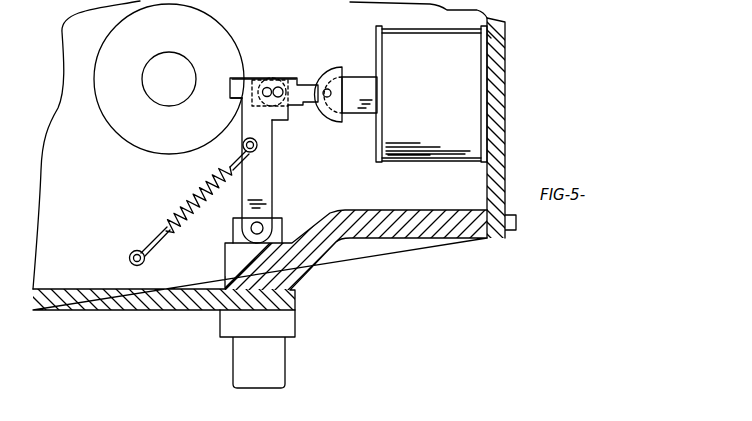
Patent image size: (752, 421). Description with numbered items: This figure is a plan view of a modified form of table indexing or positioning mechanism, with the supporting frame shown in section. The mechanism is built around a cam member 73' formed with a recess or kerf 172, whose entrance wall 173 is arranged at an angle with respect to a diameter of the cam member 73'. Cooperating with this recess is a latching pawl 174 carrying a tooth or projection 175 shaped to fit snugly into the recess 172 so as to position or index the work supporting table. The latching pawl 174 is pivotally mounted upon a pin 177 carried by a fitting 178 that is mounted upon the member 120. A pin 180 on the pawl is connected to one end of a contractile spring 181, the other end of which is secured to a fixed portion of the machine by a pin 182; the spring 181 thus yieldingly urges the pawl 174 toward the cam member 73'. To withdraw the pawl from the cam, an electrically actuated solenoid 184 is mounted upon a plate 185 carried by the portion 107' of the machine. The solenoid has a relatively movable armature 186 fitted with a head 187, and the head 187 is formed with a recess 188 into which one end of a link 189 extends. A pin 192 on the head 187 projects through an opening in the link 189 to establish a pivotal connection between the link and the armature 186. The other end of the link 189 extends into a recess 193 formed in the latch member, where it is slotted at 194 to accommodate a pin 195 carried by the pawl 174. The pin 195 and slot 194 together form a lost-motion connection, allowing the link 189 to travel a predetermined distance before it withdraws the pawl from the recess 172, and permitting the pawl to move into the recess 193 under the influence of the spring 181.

The cam member 73' is at (155, 79).
The recess or kerf 172 is at (230, 88).
The entrance wall 173 is at (243, 78).
The tooth or projection 175 is at (241, 102).
The recess 193 is at (258, 78).
The slot 194 is at (266, 88).
The pin 195 is at (278, 87).
The link 189 is at (303, 85).
The recess 188 is at (334, 116).
The pin 192 is at (322, 118).
The armature 186 is at (362, 80).
The head 187 is at (342, 72).
The plate 185 is at (478, 122).
The solenoid 184 is at (414, 162).
The portion of the machine 107' is at (518, 130).
The member 120 is at (336, 244).
The fitting 178 is at (233, 236).
The latching pawl 174 is at (266, 170).
The pin 177 is at (259, 226).
The pin 180 is at (258, 146).
The contractile spring 181 is at (178, 202).
The pin 182 is at (132, 252).